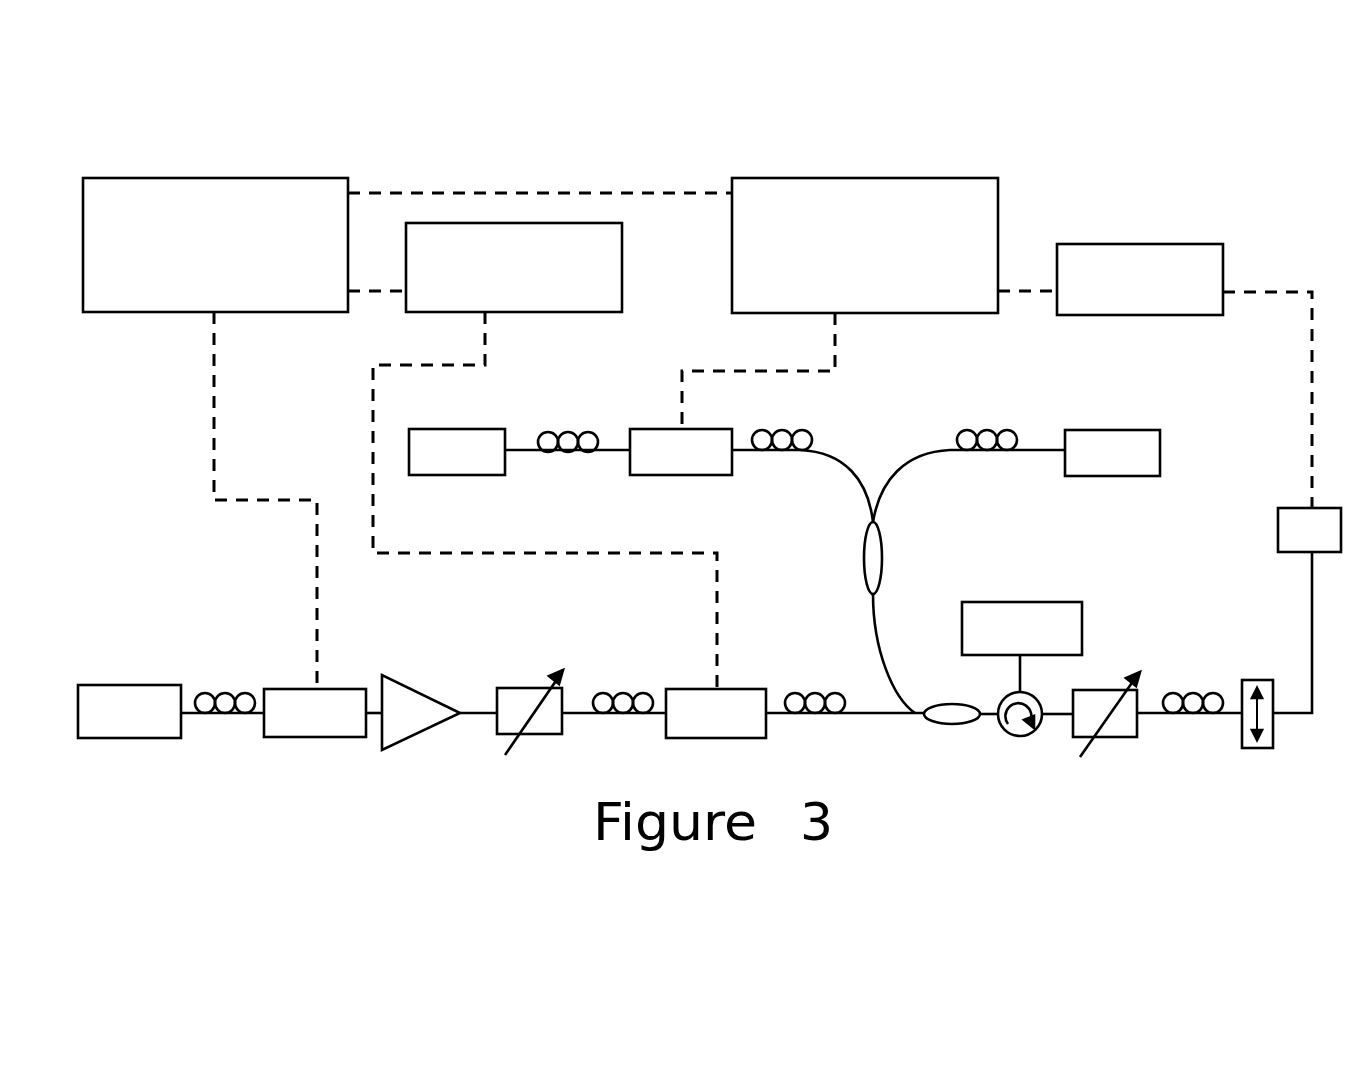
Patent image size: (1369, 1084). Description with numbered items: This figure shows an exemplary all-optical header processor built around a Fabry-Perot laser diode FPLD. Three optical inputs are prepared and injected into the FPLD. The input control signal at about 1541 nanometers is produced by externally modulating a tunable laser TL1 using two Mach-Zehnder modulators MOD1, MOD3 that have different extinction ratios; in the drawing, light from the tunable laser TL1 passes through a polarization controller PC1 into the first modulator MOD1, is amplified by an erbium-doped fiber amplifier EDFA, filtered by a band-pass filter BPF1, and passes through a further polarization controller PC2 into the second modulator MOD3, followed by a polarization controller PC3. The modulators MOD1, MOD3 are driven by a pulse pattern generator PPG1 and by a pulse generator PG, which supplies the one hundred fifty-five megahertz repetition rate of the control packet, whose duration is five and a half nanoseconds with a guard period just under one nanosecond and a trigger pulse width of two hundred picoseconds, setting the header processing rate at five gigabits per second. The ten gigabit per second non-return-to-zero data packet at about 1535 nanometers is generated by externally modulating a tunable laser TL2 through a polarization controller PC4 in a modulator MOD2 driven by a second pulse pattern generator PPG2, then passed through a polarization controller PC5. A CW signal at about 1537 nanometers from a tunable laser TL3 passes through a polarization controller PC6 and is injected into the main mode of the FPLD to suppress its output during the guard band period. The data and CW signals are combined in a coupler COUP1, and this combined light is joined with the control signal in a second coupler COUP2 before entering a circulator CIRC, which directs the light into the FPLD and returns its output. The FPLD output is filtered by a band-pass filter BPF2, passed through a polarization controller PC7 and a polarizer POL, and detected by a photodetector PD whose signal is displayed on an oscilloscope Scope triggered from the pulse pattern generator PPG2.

The 10 Gb/s NRZ pulse pattern generator (control) PPG1 is at (215, 245).
The 155 MHz pulse generator PG is at (514, 267).
The 10 Gb/s NRZ pulse pattern generator (data) PPG2 is at (865, 245).
The oscilloscope Scope is at (1140, 279).
The tunable laser TL-1 TL1 is at (129, 686).
The tunable laser TL-2 TL2 is at (457, 439).
The tunable laser TL-3 TL3 is at (1112, 441).
The polarization controller 1 PC1 is at (225, 690).
The polarization controller 2 PC2 is at (623, 691).
The polarization controller 3 PC3 is at (815, 691).
The polarization controller 4 PC4 is at (568, 430).
The polarization controller 5 PC5 is at (782, 429).
The polarization controller 6 PC6 is at (996, 429).
The polarization controller 7 PC7 is at (1193, 690).
The Mach-Zehnder modulator MOD1 is at (315, 713).
The modulator MOD2 is at (681, 452).
The Mach-Zehnder modulator MOD3 is at (716, 713).
The erbium-doped fiber amplifier EDFA is at (421, 703).
The band-pass filter 1 BPF1 is at (530, 712).
The band-pass filter 2 BPF2 is at (1106, 714).
The optical coupler (data/CW) COUP1 is at (906, 558).
The optical coupler (main line) COUP2 is at (950, 699).
The optical circulator CIRC is at (1020, 714).
The FP-LD FPLD is at (1022, 628).
The polarizer POL is at (1253, 695).
The photodetector PD is at (1309, 530).